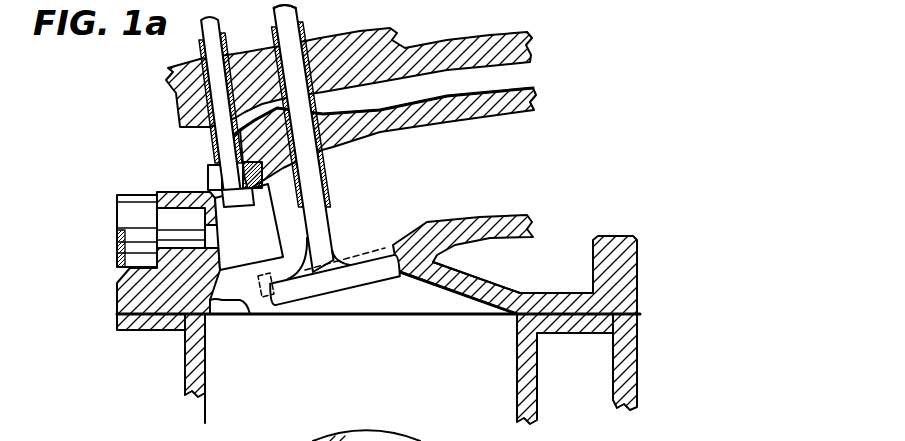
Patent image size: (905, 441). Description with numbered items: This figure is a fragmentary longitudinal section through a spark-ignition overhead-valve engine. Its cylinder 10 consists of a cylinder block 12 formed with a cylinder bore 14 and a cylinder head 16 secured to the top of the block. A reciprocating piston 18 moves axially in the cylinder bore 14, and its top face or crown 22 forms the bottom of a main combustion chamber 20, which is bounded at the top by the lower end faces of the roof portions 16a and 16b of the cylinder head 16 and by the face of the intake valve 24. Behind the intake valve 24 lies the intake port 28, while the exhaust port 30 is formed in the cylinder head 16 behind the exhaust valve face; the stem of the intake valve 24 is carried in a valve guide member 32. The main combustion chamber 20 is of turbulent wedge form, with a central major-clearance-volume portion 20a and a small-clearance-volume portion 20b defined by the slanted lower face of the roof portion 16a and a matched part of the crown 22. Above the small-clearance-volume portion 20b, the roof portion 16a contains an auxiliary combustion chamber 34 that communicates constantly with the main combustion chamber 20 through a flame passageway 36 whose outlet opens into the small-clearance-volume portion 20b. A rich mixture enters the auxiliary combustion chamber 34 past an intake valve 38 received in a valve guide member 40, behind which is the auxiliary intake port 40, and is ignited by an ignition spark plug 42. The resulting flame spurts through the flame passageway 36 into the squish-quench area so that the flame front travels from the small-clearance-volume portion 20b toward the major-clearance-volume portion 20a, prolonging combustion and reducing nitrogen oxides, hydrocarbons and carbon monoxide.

The cylinder 10 is at (170, 368).
The cylinder block 12 is at (643, 343).
The cylinder bore 14 is at (518, 383).
The cylinder head 16 is at (640, 271).
The roof portion 16a is at (247, 315).
The roof portion 16b is at (416, 285).
The reciprocating piston 18 is at (204, 411).
The main combustion chamber 20 is at (437, 299).
The major-clearance-volume portion 20a is at (360, 302).
The small-clearance-volume portion 20b is at (237, 316).
The top face or crown 22 is at (487, 288).
The intake valve 24 is at (336, 243).
The intake port 28 is at (447, 122).
The exhaust port 30 is at (545, 440).
The valve guide member 32 is at (300, 28).
The auxiliary combustion chamber 34 is at (210, 197).
The flame passageway 36 is at (222, 280).
The intake valve 38 is at (210, 150).
The valve guide member 40 is at (442, 66).
The ignition spark plug 42 is at (249, 227).